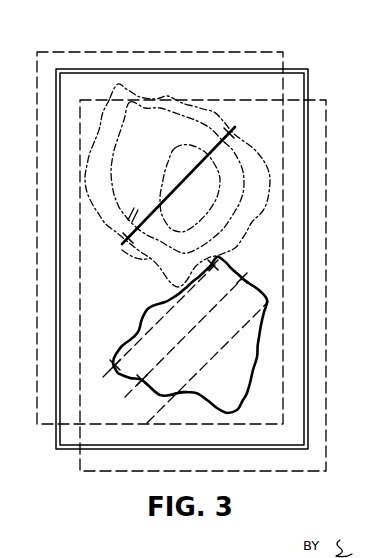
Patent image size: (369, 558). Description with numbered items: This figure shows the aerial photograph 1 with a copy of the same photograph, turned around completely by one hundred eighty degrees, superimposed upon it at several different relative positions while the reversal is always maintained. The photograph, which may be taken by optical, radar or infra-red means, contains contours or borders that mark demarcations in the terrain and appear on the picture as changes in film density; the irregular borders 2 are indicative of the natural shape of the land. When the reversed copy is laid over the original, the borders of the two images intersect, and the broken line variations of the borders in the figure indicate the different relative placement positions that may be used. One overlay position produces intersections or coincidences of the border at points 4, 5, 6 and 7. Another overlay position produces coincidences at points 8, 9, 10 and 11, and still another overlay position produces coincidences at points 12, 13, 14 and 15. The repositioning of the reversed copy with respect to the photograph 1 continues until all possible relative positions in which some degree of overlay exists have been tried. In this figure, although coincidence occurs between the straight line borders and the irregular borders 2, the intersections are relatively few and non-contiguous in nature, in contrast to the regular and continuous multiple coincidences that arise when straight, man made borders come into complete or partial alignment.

The aerial photograph 1 is at (232, 130).
The irregular borders 2 is at (247, 392).
The coincidence point 4 is at (111, 364).
The coincidence point 5 is at (218, 262).
The coincidence point 6 is at (122, 239).
The coincidence point 7 is at (236, 134).
The coincidence point 8 is at (140, 381).
The coincidence point 9 is at (243, 275).
The coincidence point 10 is at (222, 135).
The coincidence point 11 is at (141, 208).
The coincidence point 12 is at (180, 392).
The coincidence point 13 is at (247, 279).
The coincidence point 14 is at (122, 252).
The coincidence point 15 is at (200, 158).